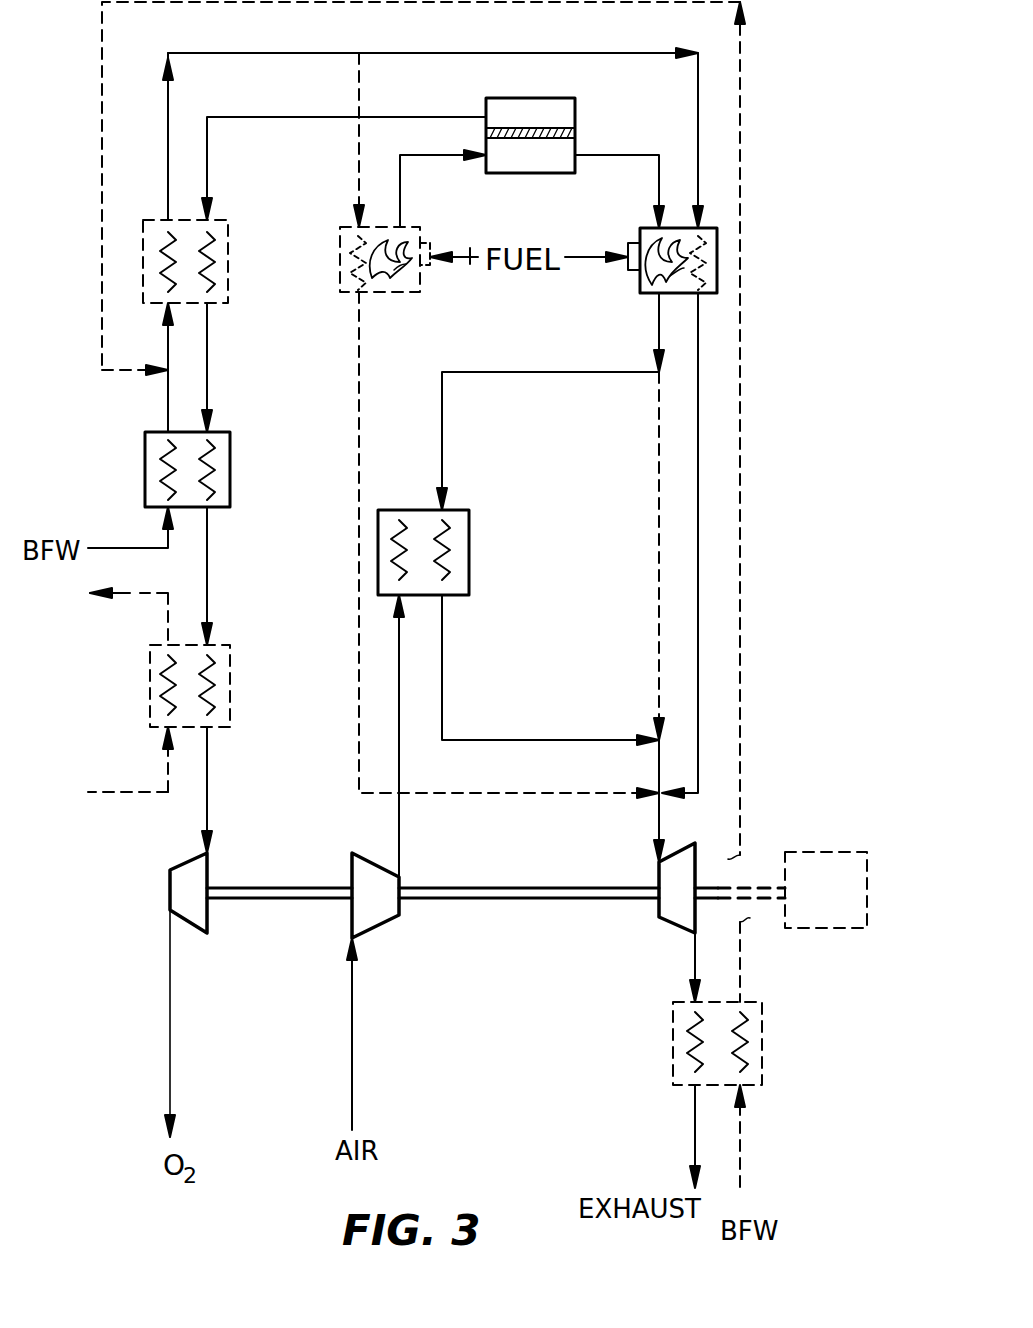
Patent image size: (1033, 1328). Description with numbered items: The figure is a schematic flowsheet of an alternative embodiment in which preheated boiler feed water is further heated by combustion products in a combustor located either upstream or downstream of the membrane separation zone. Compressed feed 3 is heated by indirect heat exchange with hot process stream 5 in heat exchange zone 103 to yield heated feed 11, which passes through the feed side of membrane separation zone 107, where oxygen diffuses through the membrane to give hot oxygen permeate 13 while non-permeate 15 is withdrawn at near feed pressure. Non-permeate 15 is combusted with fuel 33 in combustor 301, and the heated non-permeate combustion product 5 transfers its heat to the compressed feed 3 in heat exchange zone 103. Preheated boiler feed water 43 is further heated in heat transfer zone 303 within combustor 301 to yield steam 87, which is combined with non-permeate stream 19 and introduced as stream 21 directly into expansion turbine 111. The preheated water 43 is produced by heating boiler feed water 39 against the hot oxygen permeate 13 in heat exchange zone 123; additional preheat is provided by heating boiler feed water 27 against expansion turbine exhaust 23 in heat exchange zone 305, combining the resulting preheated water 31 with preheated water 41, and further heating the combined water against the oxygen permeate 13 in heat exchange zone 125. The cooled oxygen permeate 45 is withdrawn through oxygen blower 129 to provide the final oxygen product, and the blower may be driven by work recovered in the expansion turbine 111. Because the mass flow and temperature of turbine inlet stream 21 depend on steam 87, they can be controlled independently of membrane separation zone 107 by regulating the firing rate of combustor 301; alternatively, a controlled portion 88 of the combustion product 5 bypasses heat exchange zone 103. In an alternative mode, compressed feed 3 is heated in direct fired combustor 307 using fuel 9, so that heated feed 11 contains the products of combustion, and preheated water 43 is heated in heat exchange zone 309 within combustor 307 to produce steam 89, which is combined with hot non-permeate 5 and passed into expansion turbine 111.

The compressed feed 3 is at (399, 828).
The hot process stream 5 is at (659, 330).
The fuel 9 is at (470, 250).
The heated feed 11 is at (400, 192).
The hot oxygen permeate 13 is at (250, 117).
The non-permeate 15 is at (628, 155).
The non-permeate stream 19 is at (442, 665).
The turbine inlet stream 21 is at (659, 825).
The expansion turbine exhaust 23 is at (693, 965).
The boiler feed water 27 is at (740, 1140).
The preheated water 31 is at (740, 628).
The fuel 33 is at (590, 258).
The boiler feed water 39 is at (130, 548).
The preheated water 41 is at (168, 400).
The preheated boiler feed water 43 is at (305, 53).
The oxygen permeate 45 is at (207, 582).
The steam 87 is at (698, 445).
The controlled portion of heated non-permeate combustion product 88 is at (659, 442).
The steam 89 is at (359, 652).
The heat exchange zone 103 is at (469, 545).
The membrane separation zone 107 is at (562, 96).
The expansion turbine 111 is at (657, 916).
The heat exchange zone 123 is at (262, 482).
The heat exchange zone 125 is at (228, 255).
The oxygen blower 129 is at (190, 862).
The combustor 301 is at (640, 228).
The heat transfer zone 303 is at (717, 240).
The heat exchange zone 305 is at (762, 1025).
The direct fired combustor 307 is at (422, 293).
The heat exchange zone 309 is at (340, 278).